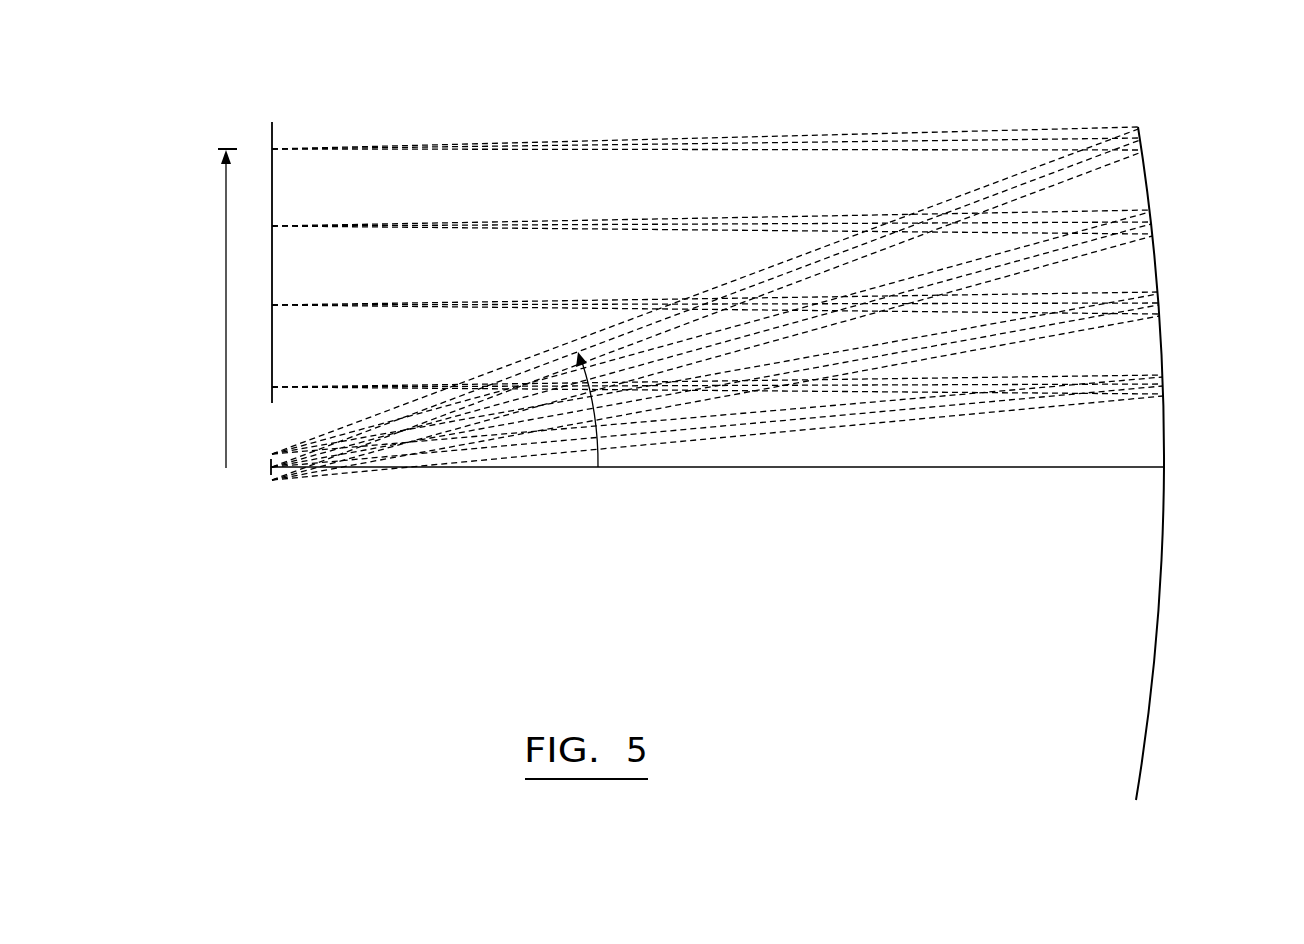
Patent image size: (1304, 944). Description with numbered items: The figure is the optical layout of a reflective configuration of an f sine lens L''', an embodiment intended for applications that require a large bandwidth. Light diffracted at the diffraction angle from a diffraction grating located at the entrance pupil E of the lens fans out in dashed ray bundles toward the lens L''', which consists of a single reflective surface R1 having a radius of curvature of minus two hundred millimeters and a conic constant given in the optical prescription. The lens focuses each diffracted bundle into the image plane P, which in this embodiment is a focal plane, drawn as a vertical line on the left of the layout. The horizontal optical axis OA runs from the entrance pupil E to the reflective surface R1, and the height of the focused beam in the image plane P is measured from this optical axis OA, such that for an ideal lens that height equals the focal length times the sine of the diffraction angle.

The image plane P is at (258, 136).
The entrance pupil E is at (257, 483).
The optical axis OA is at (855, 468).
The f sin(θ) lens L''' is at (1175, 261).
The reflective surface R1 is at (1138, 688).